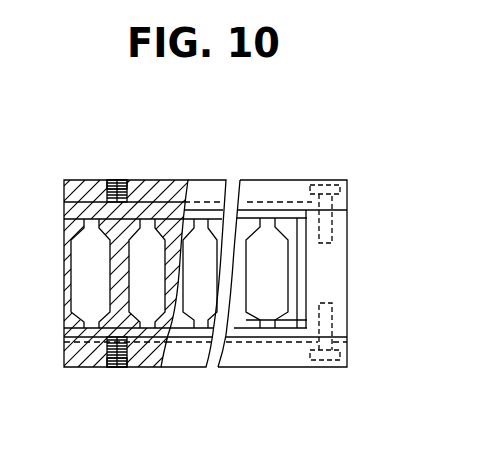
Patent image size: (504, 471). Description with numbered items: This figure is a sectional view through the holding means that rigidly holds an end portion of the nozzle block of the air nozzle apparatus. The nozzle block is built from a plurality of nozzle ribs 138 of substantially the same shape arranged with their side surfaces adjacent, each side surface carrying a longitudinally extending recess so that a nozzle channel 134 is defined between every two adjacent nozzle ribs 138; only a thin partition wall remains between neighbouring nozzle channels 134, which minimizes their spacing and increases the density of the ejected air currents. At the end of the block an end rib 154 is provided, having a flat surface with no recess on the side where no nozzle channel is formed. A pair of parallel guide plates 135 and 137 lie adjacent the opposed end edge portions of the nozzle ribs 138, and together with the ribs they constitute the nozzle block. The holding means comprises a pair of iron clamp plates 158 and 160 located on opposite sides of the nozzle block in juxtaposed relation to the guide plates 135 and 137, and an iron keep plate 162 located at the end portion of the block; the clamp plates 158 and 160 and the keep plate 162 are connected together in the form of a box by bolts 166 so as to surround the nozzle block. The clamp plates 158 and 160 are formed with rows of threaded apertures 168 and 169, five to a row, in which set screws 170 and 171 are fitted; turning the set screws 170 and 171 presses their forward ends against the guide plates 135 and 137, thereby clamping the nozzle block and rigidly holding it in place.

The nozzle channel 134 is at (90, 302).
The guide plate 135 is at (233, 330).
The guide plate 137 is at (253, 190).
The nozzle rib 138 is at (105, 227).
The end rib 154 is at (284, 226).
The clamp plate 158 is at (280, 360).
The clamp plate 160 is at (208, 191).
The keep plate 162 is at (338, 262).
The bolt 166 is at (330, 184).
The threaded aperture 168 is at (115, 369).
The threaded aperture 169 is at (118, 181).
The set screw 170 is at (112, 369).
The set screw 171 is at (115, 181).